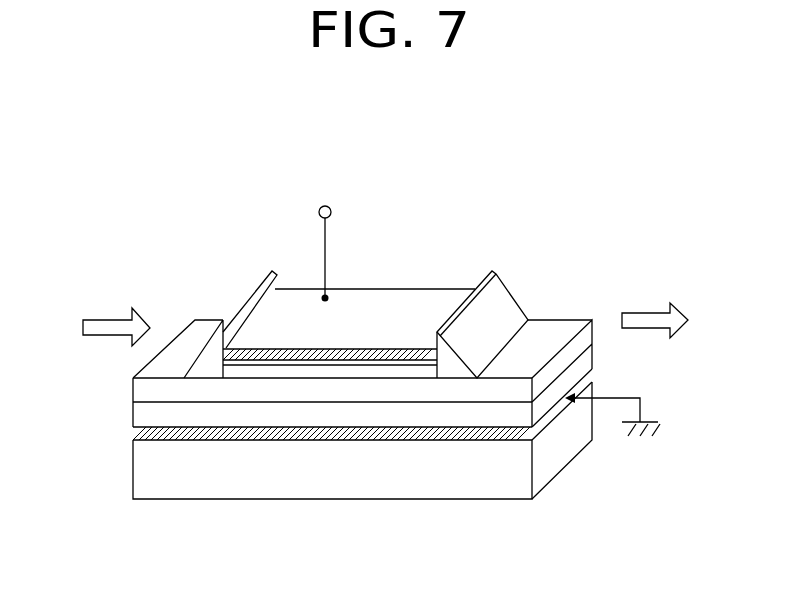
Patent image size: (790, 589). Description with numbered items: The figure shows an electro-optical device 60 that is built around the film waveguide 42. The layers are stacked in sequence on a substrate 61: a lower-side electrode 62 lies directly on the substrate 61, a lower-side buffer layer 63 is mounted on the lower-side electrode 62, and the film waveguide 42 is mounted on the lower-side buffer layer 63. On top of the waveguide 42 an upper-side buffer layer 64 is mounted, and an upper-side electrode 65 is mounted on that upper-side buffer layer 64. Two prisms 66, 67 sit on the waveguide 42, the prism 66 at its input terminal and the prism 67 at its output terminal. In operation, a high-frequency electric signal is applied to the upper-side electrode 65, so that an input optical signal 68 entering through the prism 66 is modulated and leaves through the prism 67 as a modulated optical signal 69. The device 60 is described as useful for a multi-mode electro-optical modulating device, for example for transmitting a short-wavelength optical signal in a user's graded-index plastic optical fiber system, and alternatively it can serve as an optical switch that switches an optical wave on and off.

The electro-optical device 60 is at (427, 186).
The substrate 61 is at (458, 487).
The lower-side electrode 62 is at (283, 433).
The lower-side buffer layer 63 is at (148, 415).
The film waveguide 42 is at (148, 392).
The upper-side buffer layer 64 is at (348, 375).
The upper-side electrode 65 is at (420, 298).
The prism 66 is at (248, 297).
The prism 67 is at (507, 289).
The input optical signal 68 is at (105, 318).
The modulated optical signal 69 is at (638, 318).